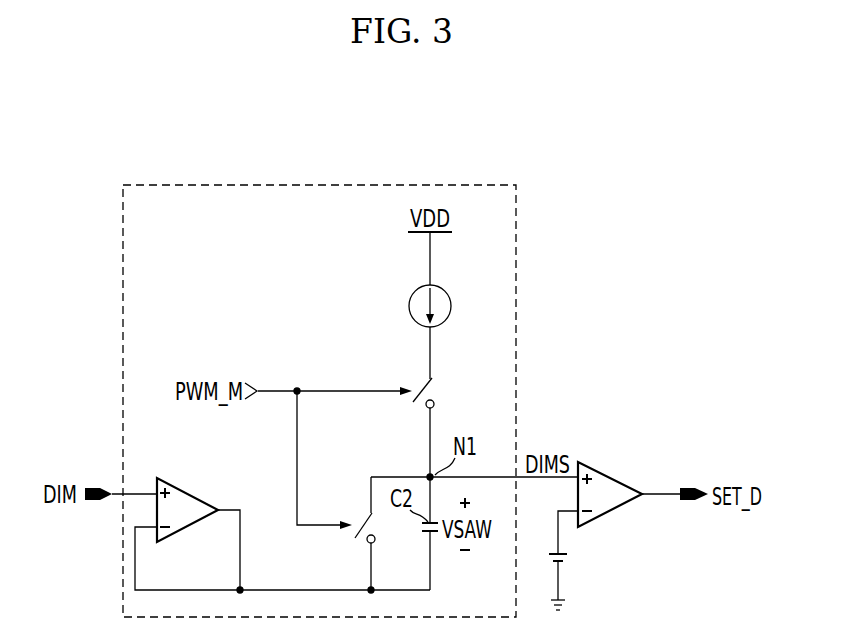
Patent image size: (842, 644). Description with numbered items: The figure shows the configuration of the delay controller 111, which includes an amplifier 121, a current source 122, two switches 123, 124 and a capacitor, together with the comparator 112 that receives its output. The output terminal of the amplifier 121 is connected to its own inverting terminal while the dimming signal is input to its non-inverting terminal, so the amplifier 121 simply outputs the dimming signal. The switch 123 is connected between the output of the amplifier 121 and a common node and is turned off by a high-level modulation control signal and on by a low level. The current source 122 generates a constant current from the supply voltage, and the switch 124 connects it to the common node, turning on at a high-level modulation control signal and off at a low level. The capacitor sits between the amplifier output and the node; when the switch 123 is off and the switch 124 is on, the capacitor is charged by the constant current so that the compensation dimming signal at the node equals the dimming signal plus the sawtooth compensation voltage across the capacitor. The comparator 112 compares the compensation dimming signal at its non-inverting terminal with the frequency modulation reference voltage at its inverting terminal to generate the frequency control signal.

The delay controller 111 is at (548, 275).
The comparator 112 is at (608, 476).
The amplifier 121 is at (188, 492).
The current source 122 is at (410, 303).
The switch 123 is at (377, 530).
The switch 124 is at (442, 388).